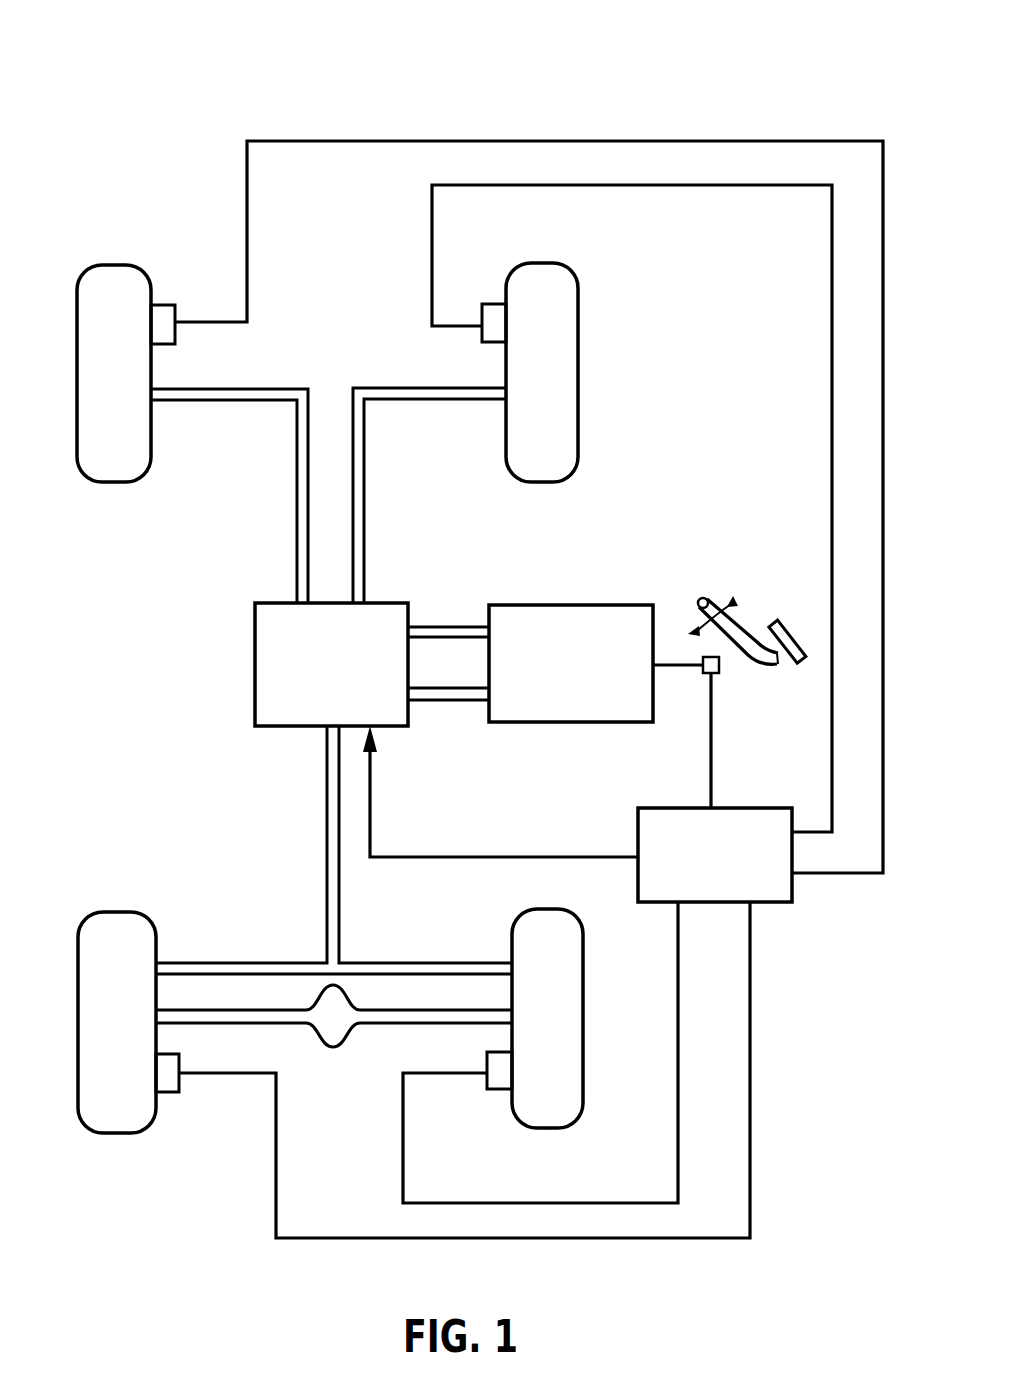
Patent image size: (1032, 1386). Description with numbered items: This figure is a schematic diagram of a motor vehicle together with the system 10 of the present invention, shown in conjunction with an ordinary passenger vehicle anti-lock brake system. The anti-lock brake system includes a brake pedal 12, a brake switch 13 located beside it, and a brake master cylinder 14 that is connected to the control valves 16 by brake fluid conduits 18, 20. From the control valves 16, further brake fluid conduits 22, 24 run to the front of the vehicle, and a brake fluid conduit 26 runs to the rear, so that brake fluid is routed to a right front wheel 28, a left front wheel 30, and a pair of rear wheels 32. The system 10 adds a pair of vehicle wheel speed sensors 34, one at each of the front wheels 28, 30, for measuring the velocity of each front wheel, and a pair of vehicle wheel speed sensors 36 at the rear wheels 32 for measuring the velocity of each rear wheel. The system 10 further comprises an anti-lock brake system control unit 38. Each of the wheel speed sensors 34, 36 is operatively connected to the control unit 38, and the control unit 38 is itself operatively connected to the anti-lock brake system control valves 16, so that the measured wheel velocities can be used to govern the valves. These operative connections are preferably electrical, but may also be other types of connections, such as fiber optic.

The system 10 is at (366, 58).
The brake pedal 12 is at (745, 622).
The brake switch 13 is at (703, 661).
The brake master cylinder 14 is at (597, 605).
The control valves 16 is at (255, 660).
The brake fluid conduit 18 is at (449, 627).
The brake fluid conduit 20 is at (445, 700).
The brake fluid conduit 22 is at (365, 495).
The brake fluid conduit 24 is at (297, 506).
The brake fluid conduit 26 is at (339, 917).
The right front wheel 28 is at (578, 327).
The left front wheel 30 is at (108, 265).
The rear wheels 32 is at (135, 912).
The vehicle wheel speed sensors 34 is at (163, 305).
The vehicle wheel speed sensors 36 is at (170, 1092).
The anti-lock brake system control unit 38 is at (760, 808).